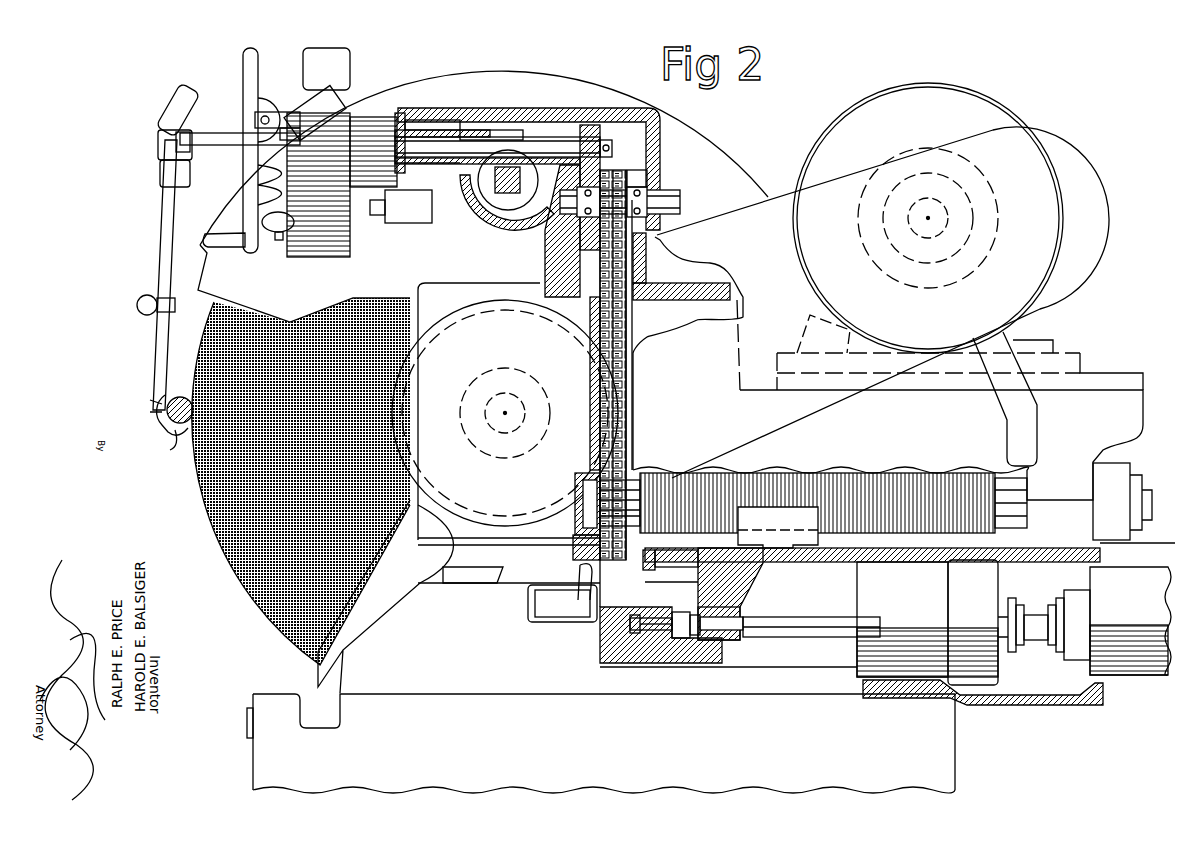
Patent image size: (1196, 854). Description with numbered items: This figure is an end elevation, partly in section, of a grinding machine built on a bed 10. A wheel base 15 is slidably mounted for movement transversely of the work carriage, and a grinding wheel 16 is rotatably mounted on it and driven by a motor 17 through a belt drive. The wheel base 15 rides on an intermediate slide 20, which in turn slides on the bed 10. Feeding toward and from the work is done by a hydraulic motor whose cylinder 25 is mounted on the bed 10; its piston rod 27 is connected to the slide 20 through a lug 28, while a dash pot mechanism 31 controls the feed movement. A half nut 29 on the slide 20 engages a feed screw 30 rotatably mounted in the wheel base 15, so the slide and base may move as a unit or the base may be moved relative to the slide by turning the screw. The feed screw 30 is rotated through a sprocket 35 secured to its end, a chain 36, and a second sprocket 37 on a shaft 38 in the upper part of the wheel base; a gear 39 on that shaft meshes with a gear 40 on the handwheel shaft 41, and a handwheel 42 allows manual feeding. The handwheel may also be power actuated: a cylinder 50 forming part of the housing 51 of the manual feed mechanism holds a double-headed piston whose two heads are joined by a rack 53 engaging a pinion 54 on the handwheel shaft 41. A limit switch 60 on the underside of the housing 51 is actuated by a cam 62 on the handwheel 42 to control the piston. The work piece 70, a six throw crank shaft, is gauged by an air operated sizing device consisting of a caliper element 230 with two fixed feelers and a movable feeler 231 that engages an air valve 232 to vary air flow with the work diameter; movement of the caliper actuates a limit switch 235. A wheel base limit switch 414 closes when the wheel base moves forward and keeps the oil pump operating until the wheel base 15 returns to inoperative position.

The bed 10 is at (945, 748).
The wheel base 15 is at (1110, 390).
The grinding wheel 16 is at (252, 598).
The motor 17 is at (877, 88).
The intermediate slide 20 is at (822, 567).
The cylinder 25 is at (900, 680).
The piston rod 27 is at (775, 640).
The lug 28 is at (736, 642).
The half nut 29 is at (785, 507).
The feed screw 30 is at (905, 478).
The dash pot mechanism 31 is at (1140, 668).
The sprocket 35 is at (597, 546).
The chain 36 is at (630, 397).
The sprocket 37 is at (662, 175).
The shaft 38 is at (655, 200).
The gear 39 is at (640, 160).
The gear 40 is at (590, 125).
The handwheel shaft 41 is at (535, 137).
The handwheel 42 is at (243, 62).
The cylinder 50 is at (492, 200).
The housing 51 is at (445, 108).
The rack 53 is at (510, 195).
The pinion 54 is at (500, 130).
The limit switch 60 is at (410, 223).
The cam 62 is at (362, 220).
The work piece 70 is at (184, 440).
The caliper element 230 is at (160, 398).
The movable feeler 231 is at (165, 395).
The air valve 232 is at (158, 140).
The limit switch 235 is at (335, 105).
The wheel base limit switch 414 is at (556, 622).